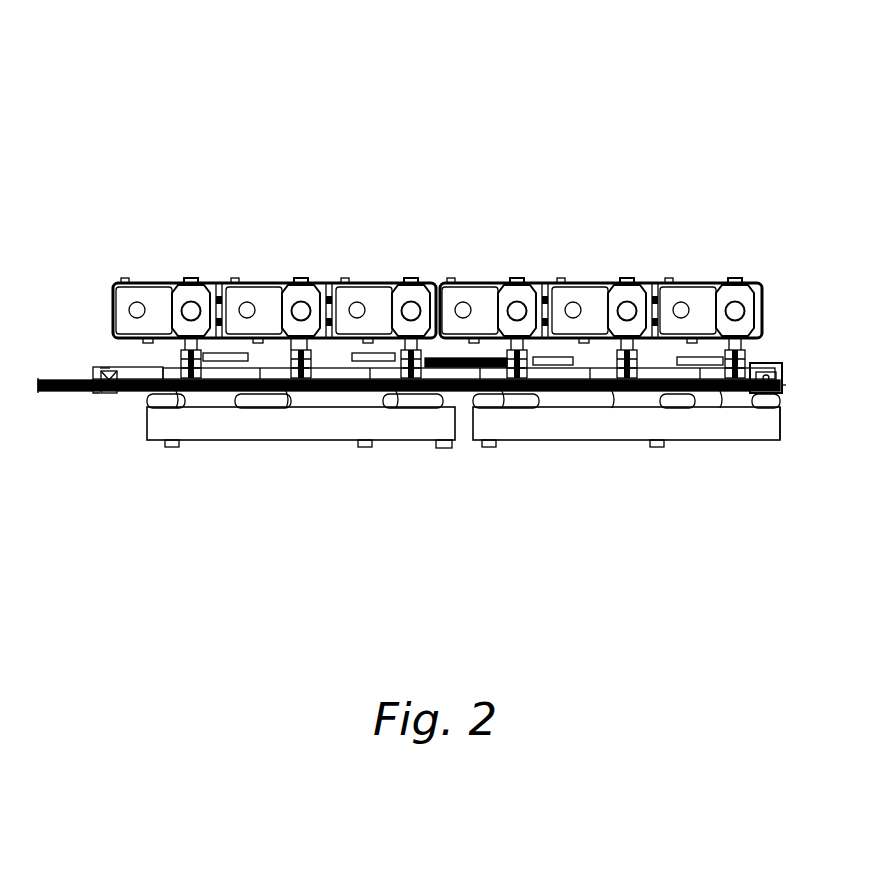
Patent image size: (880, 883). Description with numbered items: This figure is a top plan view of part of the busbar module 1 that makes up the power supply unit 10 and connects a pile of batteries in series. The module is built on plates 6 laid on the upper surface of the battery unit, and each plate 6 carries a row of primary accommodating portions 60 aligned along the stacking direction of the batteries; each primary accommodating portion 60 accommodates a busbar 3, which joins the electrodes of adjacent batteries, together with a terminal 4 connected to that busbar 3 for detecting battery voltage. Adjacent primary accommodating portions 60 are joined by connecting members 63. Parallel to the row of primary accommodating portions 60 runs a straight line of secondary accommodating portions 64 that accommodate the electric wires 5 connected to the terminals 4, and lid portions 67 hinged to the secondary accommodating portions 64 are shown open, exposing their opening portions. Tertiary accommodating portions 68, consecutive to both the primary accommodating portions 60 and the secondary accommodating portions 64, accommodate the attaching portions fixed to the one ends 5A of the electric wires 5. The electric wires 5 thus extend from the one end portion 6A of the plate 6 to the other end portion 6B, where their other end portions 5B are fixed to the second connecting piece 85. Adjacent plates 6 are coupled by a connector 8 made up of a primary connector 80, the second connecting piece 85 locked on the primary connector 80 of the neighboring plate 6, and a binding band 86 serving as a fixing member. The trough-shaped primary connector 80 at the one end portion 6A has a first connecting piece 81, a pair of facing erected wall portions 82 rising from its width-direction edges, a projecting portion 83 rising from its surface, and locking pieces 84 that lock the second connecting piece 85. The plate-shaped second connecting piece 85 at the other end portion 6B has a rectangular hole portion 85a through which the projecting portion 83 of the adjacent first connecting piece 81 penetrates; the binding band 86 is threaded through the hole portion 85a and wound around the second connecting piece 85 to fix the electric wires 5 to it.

The power supply device 10 is at (815, 100).
The busbar module 1 is at (779, 190).
The plate 6 is at (430, 238).
The primary accommodating portion 60 is at (125, 283).
The busbar 3 is at (165, 298).
The terminal 4 is at (191, 300).
The connecting member 63 is at (219, 290).
The locking piece 84 is at (445, 362).
The electric wire 5 is at (123, 393).
The one end of electric wire 5A is at (187, 396).
The other end portion of electric wire 5B is at (37, 384).
The second connecting piece 85 is at (97, 368).
The hole portion 85a is at (104, 366).
The binding band 86 is at (107, 394).
The other end portion of plate 6B is at (97, 391).
The tertiary accommodating portion 68 is at (197, 396).
The secondary accommodating portion 64 is at (243, 417).
The lid portion 67 is at (250, 422).
The connector 8 is at (440, 410).
The one end portion of plate 6A is at (777, 440).
The primary connector 80 is at (784, 376).
The first connecting piece 81 is at (783, 387).
The erected wall portion 82 is at (766, 358).
The projecting portion 83 is at (776, 384).